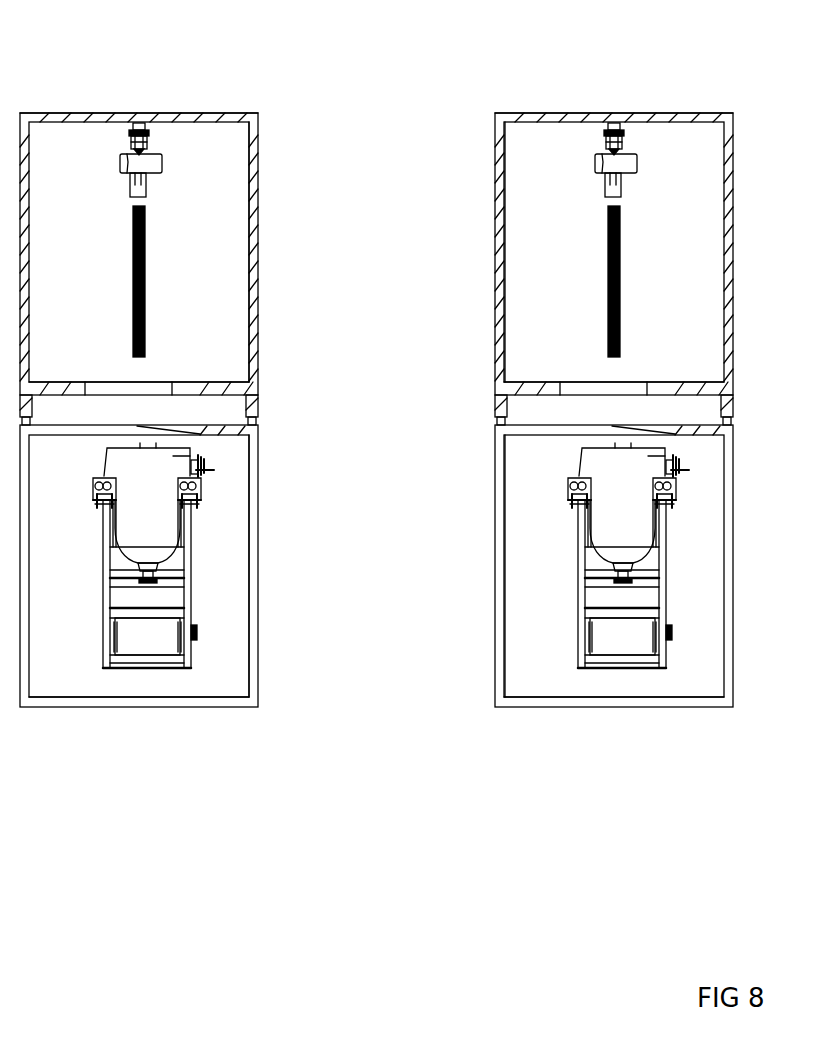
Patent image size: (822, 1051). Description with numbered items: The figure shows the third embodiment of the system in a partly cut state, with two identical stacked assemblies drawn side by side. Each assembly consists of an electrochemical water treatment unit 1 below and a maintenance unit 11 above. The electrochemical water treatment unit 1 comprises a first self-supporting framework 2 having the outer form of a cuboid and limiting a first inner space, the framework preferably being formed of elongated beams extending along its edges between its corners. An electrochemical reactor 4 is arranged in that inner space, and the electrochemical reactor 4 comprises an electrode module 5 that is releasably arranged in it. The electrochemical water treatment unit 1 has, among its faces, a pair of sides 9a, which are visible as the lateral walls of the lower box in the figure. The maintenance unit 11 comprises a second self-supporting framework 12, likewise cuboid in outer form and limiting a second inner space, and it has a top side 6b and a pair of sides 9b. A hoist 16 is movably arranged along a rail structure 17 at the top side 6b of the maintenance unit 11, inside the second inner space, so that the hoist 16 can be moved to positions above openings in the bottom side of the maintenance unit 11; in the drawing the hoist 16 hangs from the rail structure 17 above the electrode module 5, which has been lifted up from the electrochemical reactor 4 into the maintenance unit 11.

The electrochemical water treatment unit 1 is at (446, 582).
The first self-supporting framework 2 is at (496, 468).
The electrochemical reactor 4 is at (559, 585).
The electrode module 5 is at (141, 250).
The top side 6b is at (90, 112).
The pair of sides 9a is at (495, 505).
The pair of sides 9b is at (495, 232).
The maintenance unit 11 is at (457, 290).
The second self-supporting framework 12 is at (503, 143).
The hoist 16 is at (150, 160).
The rail structure 17 is at (137, 120).